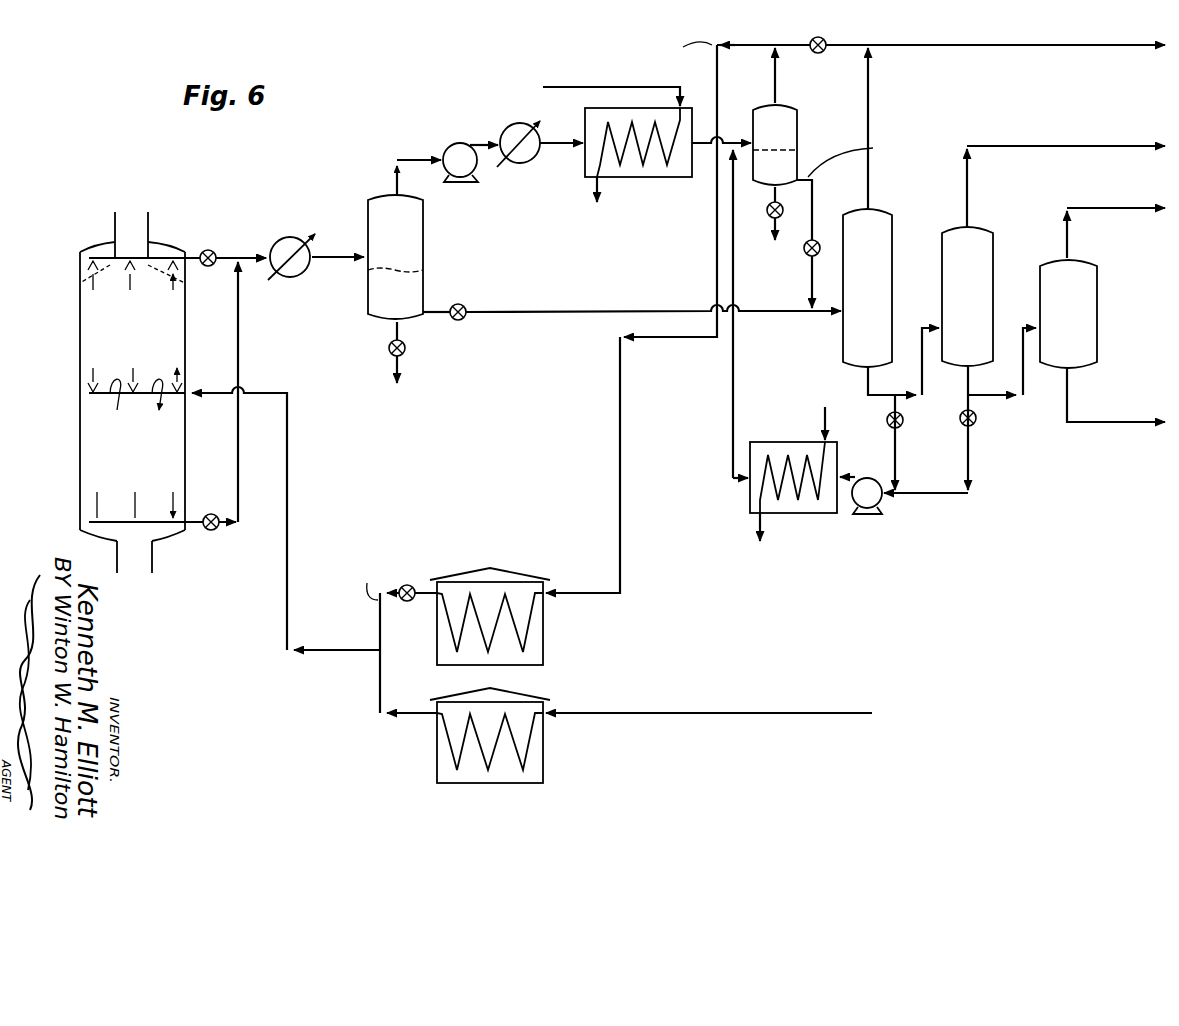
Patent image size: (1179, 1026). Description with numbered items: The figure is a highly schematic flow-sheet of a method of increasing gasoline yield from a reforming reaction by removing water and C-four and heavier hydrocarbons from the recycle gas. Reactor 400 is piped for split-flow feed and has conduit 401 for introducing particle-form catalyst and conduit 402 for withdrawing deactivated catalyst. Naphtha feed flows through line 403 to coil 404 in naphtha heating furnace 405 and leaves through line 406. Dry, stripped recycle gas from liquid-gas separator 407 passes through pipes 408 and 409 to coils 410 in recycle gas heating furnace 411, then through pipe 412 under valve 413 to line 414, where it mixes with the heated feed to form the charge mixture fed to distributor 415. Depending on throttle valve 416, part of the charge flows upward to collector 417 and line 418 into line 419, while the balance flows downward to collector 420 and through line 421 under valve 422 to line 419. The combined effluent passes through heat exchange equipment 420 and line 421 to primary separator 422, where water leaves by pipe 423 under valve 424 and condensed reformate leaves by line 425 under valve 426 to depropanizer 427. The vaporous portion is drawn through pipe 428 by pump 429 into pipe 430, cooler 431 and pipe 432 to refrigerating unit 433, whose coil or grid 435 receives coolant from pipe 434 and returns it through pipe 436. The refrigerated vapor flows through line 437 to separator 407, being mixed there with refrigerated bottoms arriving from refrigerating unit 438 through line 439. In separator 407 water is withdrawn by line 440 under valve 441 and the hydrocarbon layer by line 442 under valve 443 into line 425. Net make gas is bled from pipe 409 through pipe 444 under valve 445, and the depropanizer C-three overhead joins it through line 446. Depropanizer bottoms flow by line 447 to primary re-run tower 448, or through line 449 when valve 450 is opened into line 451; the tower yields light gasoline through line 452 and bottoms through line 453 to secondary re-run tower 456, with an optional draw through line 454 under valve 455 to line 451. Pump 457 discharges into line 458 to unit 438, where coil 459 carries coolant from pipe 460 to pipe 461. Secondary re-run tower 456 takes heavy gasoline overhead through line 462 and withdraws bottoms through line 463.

The reactor 400 is at (80, 330).
The conduit 401 is at (115, 222).
The conduit 402 is at (152, 563).
The line 403 is at (832, 712).
The coil 404 is at (533, 742).
The naphtha heating furnace 405 is at (545, 770).
The line 406 is at (380, 690).
The liquid-gas separator 407 is at (790, 118).
The pipe 408 is at (777, 87).
The pipe 409 is at (719, 77).
The coil 410 is at (533, 615).
The recycle gas heating furnace 411 is at (518, 575).
The pipe 412 is at (425, 599).
The valve 413 is at (400, 600).
The line 414 is at (255, 393).
The distributor 415 is at (150, 397).
The throttle valve 416 is at (211, 250).
The collector 417 is at (160, 262).
The line 418 is at (225, 265).
The line 419 is at (253, 253).
The collector 420 is at (110, 522).
The line 421 is at (238, 453).
The valve 422 is at (212, 531).
The pipe 423 is at (392, 368).
The valve 424 is at (406, 348).
The line 425 is at (608, 311).
The valve 426 is at (460, 304).
The depropanizer 427 is at (893, 215).
The pipe 428 is at (393, 175).
The pump 429 is at (447, 148).
The pipe 430 is at (477, 140).
The cooler 431 is at (517, 157).
The pipe 432 is at (554, 145).
The refrigerating unit 433 is at (592, 107).
The pipe 434 is at (662, 88).
The coil or grid 435 is at (673, 150).
The pipe 436 is at (592, 192).
The line 437 is at (733, 140).
The refrigerating unit 438 is at (800, 428).
The line 439 is at (738, 365).
The line 440 is at (773, 228).
The valve 441 is at (766, 225).
The line 442 is at (814, 187).
The valve 443 is at (805, 256).
The pipe 444 is at (892, 50).
The valve 445 is at (815, 54).
The line 446 is at (868, 100).
The line 447 is at (911, 332).
The primary re-run tower 448 is at (993, 233).
The line 449 is at (897, 448).
The valve 450 is at (905, 418).
The line 451 is at (943, 498).
The line 452 is at (1093, 152).
The line 453 is at (993, 398).
The line 454 is at (970, 467).
The valve 455 is at (977, 426).
The secondary re-run tower 456 is at (1097, 287).
The pump 457 is at (873, 513).
The line 458 is at (855, 478).
The coil 459 is at (800, 488).
The pipe 460 is at (828, 417).
The pipe 461 is at (758, 523).
The line 462 is at (1070, 207).
The line 463 is at (1097, 422).